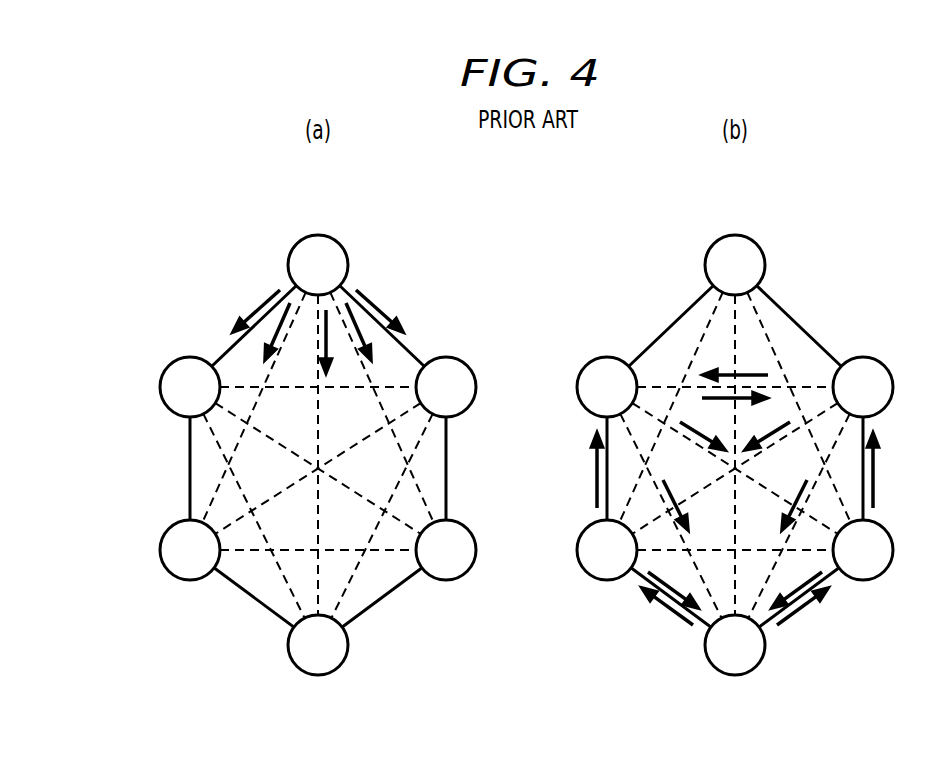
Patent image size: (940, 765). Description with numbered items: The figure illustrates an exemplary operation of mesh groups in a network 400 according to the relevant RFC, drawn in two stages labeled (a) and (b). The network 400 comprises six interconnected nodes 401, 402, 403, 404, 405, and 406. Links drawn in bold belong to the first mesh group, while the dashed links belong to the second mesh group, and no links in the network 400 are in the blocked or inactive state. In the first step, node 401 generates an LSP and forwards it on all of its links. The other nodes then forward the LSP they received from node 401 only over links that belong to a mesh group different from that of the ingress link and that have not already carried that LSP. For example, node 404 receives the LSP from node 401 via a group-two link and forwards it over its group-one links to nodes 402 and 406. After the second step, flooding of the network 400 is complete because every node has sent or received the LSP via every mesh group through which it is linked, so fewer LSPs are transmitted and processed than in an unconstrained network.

The network 400 is at (336, 192).
The node 401 is at (343, 243).
The node 402 is at (191, 357).
The node 403 is at (446, 357).
The node 404 is at (189, 581).
The node 405 is at (445, 581).
The node 406 is at (317, 676).